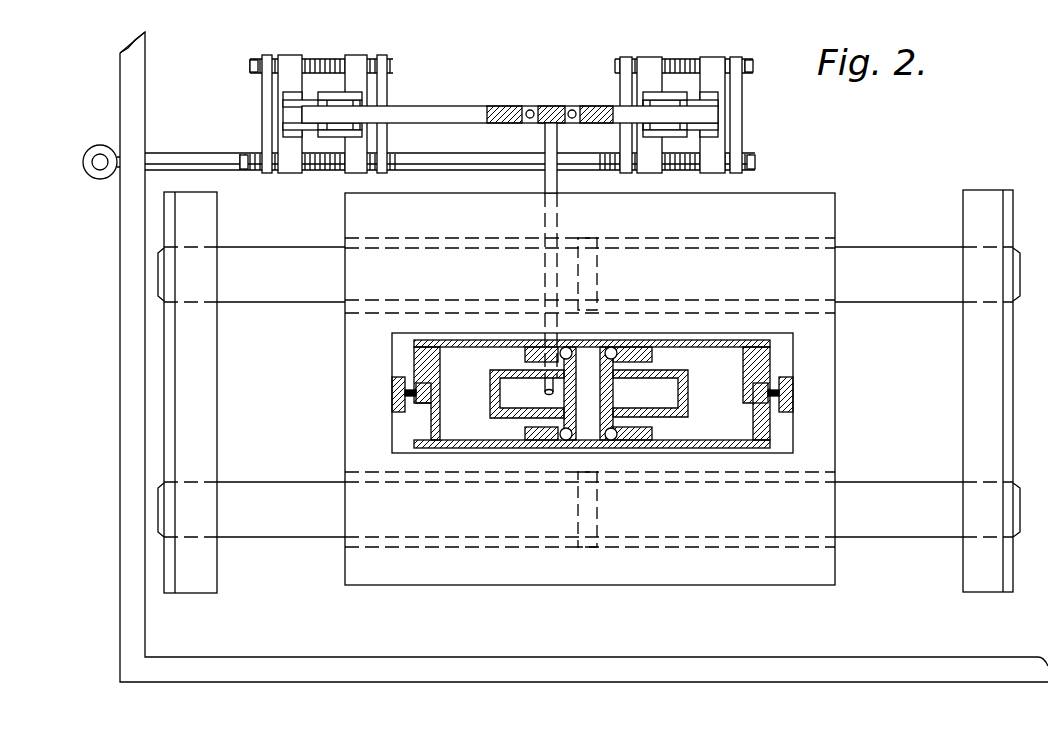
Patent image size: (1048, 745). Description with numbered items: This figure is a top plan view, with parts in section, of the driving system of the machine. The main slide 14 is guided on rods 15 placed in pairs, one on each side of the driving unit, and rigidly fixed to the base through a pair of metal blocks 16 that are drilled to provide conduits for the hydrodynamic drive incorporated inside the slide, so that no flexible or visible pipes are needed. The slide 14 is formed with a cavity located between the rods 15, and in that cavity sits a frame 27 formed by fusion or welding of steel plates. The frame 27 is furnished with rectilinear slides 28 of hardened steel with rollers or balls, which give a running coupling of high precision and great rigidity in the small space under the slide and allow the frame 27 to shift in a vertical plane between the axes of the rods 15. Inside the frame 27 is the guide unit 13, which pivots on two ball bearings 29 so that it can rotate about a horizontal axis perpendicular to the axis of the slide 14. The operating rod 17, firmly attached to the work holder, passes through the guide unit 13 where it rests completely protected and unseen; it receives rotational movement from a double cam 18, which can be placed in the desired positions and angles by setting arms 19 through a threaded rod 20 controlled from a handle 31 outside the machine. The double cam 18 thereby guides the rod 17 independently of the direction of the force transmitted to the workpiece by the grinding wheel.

The guide unit 13 is at (688, 372).
The slide 14 is at (820, 205).
The rods 15 is at (290, 490).
The metal blocks 16 is at (183, 332).
The operating rod 17 is at (548, 223).
The double cam 18 is at (422, 110).
The setting arms 19 is at (288, 101).
The threaded rod 20 is at (330, 172).
The frame 27 is at (683, 343).
The rectilinear slides 28 is at (392, 397).
The ball bearings 29 is at (568, 352).
The handle 31 is at (100, 146).